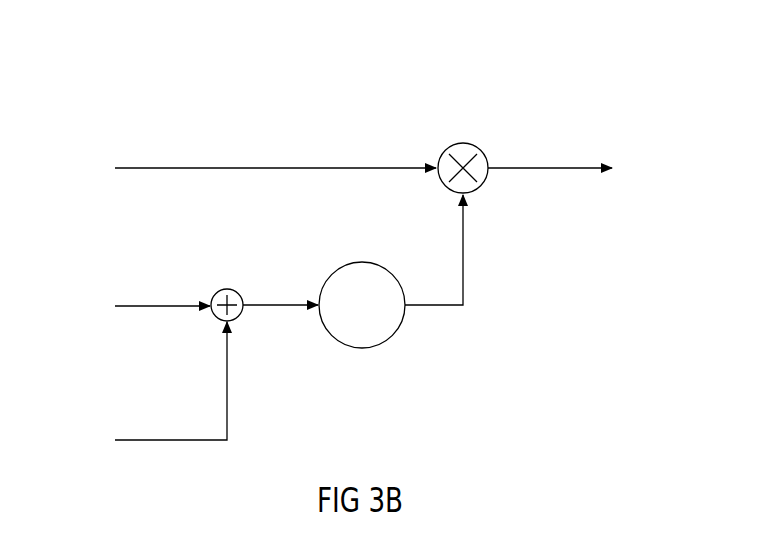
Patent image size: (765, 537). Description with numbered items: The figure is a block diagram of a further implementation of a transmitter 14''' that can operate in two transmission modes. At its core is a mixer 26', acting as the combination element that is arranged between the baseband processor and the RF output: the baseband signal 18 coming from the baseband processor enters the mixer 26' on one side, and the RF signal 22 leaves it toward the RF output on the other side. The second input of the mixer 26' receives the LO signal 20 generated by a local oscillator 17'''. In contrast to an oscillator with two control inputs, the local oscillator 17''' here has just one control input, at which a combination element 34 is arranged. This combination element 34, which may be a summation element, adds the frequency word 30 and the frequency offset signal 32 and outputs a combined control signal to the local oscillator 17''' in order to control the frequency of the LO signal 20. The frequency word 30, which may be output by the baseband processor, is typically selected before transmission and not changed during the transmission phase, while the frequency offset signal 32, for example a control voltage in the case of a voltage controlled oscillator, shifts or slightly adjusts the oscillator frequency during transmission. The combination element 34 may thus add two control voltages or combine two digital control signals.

The transmitter 14''' is at (380, 236).
The baseband signal 18 is at (78, 151).
The RF signal 22 is at (662, 151).
The mixer 26' is at (463, 133).
The frequency word 30 is at (78, 292).
The frequency offset signal 32 is at (78, 422).
The combination element 34 is at (240, 316).
The local oscillator 17''' is at (348, 323).
The LO signal 20 is at (558, 245).